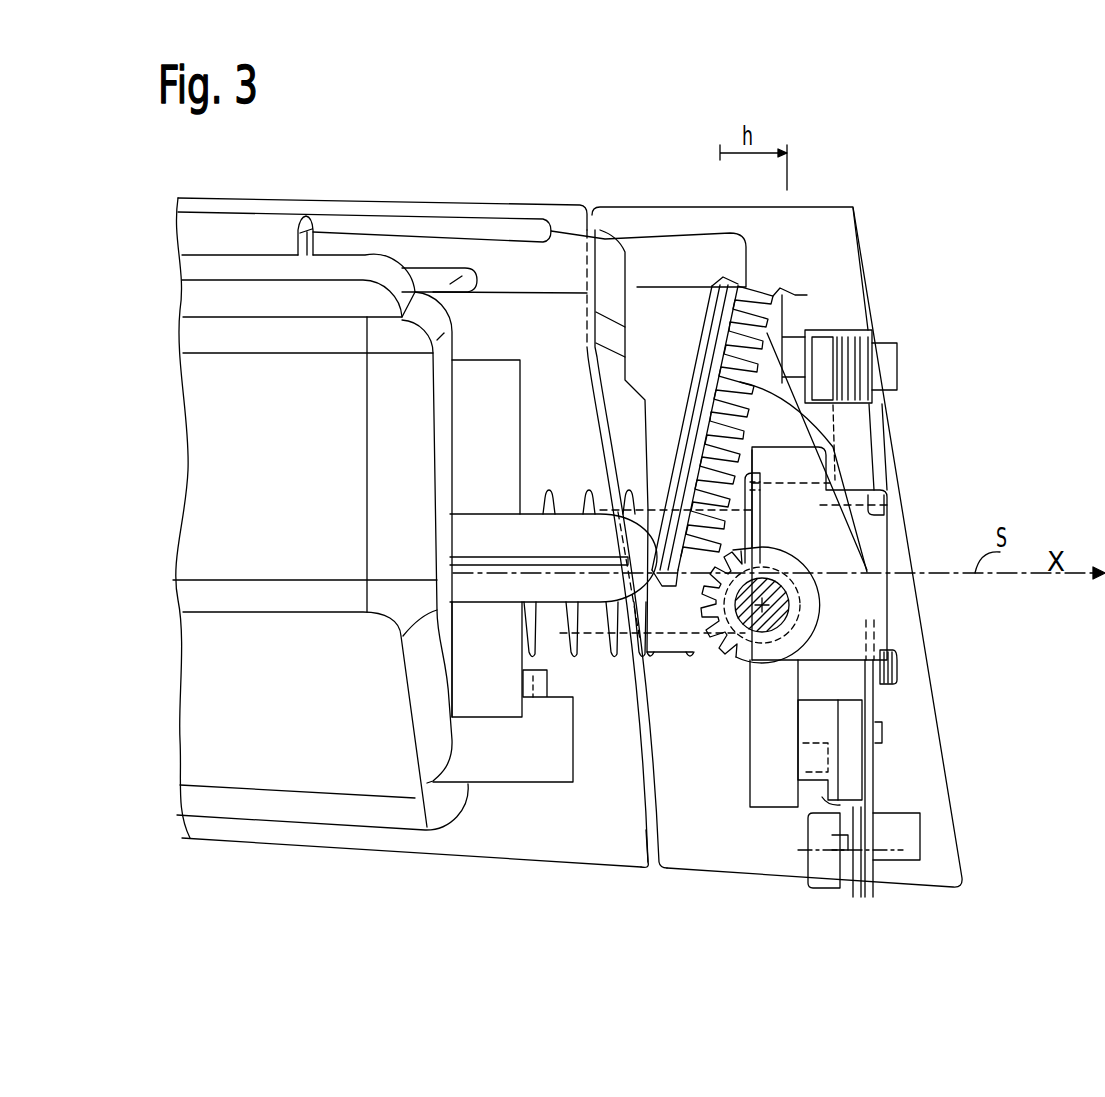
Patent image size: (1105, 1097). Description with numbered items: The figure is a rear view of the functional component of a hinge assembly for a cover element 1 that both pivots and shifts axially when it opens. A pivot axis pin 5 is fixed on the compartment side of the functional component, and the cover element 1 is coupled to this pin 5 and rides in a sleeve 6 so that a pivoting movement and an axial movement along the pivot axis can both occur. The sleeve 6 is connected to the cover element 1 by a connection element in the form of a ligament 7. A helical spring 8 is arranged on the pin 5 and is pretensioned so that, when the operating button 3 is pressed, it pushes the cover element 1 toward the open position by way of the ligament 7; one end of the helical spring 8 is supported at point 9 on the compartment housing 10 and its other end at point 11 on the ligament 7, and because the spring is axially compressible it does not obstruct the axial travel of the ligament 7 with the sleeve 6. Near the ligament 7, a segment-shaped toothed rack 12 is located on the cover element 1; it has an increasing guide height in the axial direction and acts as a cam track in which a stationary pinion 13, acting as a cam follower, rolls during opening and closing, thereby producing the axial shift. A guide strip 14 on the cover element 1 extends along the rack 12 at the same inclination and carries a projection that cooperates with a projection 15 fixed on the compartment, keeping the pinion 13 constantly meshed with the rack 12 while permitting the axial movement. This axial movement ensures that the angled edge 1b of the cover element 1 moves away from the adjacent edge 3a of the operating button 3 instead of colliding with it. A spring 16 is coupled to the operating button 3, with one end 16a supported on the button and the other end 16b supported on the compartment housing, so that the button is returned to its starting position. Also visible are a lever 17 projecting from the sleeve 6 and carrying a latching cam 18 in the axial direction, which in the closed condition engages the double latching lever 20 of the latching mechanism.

The cover element 1 is at (450, 204).
The angled edge 1b is at (647, 827).
The operating button 3 is at (853, 208).
The edge 3a is at (663, 827).
The pivot axis pin 5 is at (565, 512).
The sleeve 6 is at (865, 598).
The ligament 7 is at (797, 443).
The helical spring 8 is at (607, 655).
The support point 9 is at (535, 684).
The compartment housing 10 is at (285, 770).
The support point 11 is at (763, 487).
The segment-shaped toothed rack 12 is at (790, 297).
The pinion 13 is at (718, 650).
The guide strip 14 is at (708, 318).
The projection 15 is at (505, 590).
The spring 16 is at (870, 343).
The spring end 16a is at (876, 458).
The spring end 16b is at (884, 512).
The lever 17 is at (770, 805).
The latching cam 18 is at (873, 800).
The double latching lever 20 is at (850, 765).